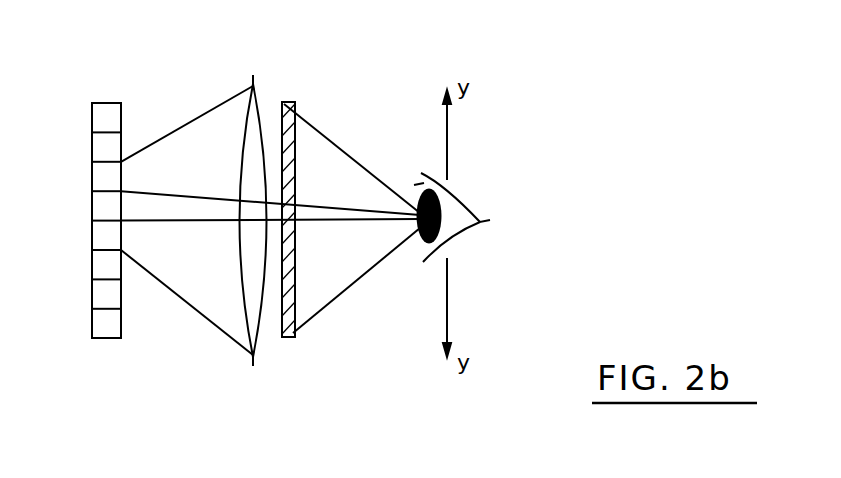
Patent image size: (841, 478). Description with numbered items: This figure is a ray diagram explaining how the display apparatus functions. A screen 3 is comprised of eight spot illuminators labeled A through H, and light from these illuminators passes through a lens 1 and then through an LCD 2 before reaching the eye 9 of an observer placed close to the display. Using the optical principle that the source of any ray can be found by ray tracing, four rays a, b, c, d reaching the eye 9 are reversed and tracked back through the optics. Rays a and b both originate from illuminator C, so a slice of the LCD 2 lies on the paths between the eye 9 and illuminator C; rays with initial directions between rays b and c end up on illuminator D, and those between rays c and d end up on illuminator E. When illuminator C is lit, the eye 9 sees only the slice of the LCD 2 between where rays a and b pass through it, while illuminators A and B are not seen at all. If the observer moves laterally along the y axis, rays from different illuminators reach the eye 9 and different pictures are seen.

The lens 1 is at (253, 363).
The LCD 2 is at (297, 333).
The screen 3 is at (100, 338).
The eye 9 is at (450, 213).
The ray a is at (187, 123).
The ray b is at (205, 184).
The ray c is at (216, 232).
The ray d is at (188, 302).